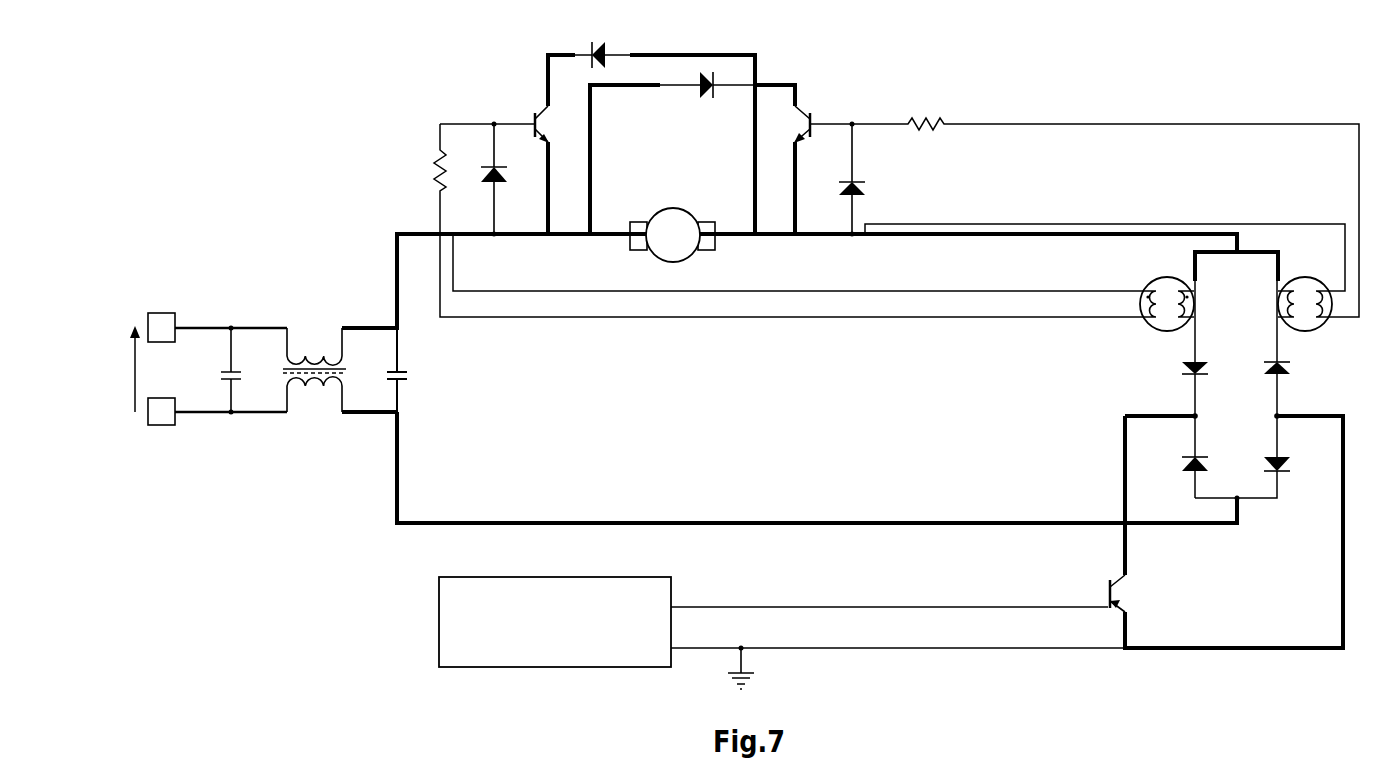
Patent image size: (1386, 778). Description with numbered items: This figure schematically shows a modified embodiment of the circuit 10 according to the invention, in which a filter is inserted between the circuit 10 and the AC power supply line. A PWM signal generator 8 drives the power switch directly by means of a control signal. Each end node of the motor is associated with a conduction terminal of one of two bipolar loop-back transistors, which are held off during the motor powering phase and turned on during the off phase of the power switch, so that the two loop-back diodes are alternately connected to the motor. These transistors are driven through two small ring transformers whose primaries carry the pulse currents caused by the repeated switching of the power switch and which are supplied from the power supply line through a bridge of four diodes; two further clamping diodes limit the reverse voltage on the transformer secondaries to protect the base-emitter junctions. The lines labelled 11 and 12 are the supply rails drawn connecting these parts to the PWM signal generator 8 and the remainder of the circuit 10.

The circuit 10 is at (348, 572).
The PWM signal generator 8 is at (555, 622).
The first supply line 11 is at (837, 272).
The second supply line 12 is at (817, 467).